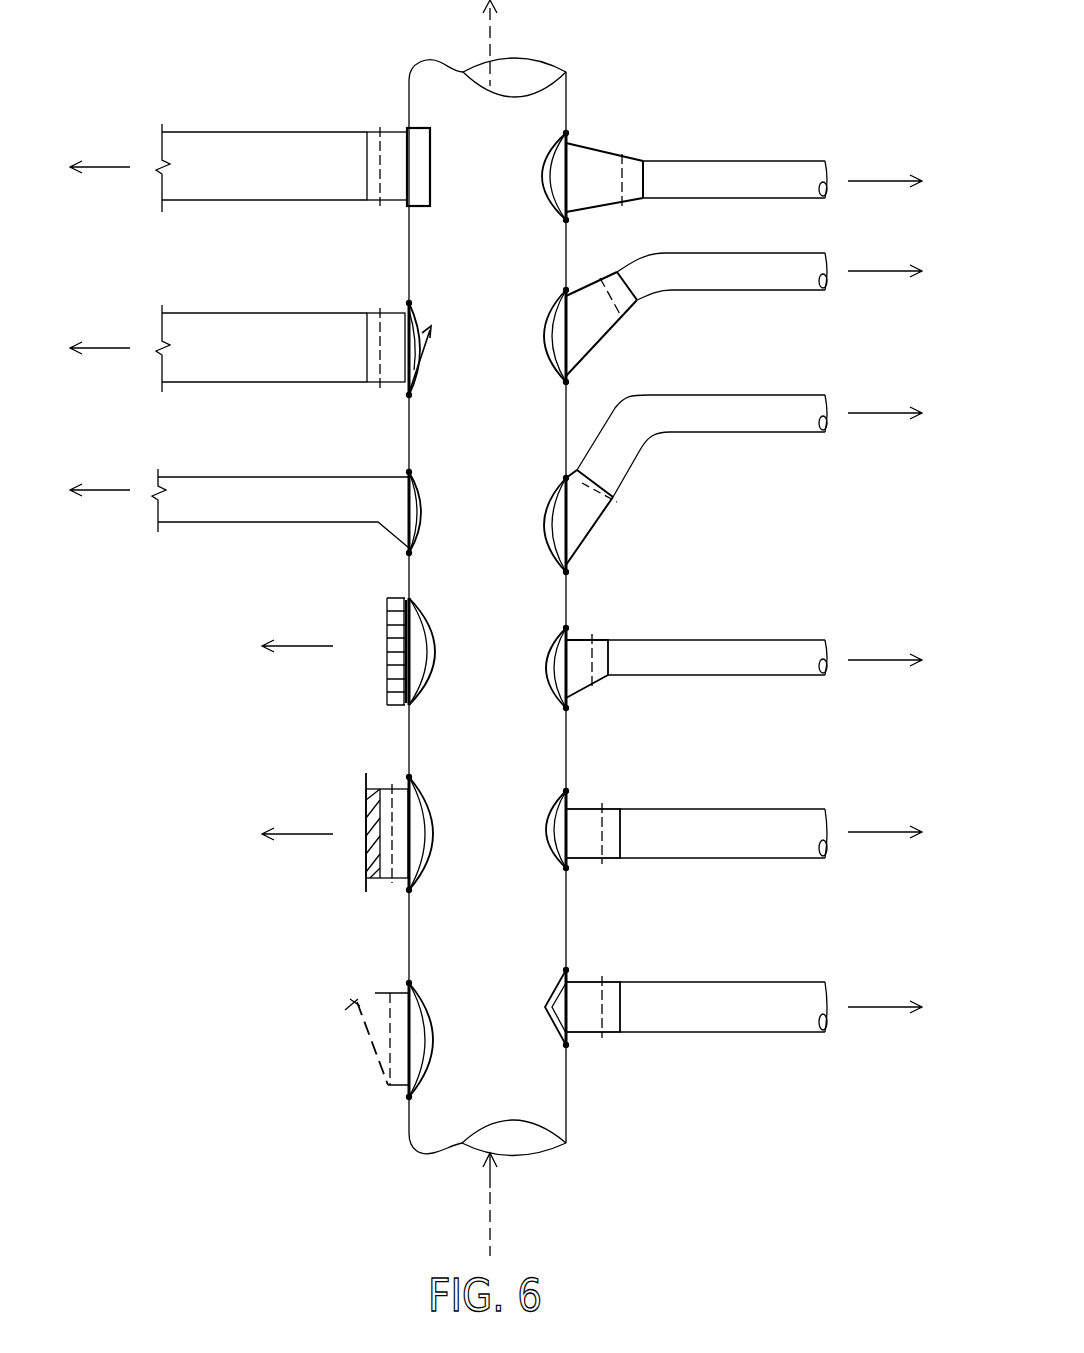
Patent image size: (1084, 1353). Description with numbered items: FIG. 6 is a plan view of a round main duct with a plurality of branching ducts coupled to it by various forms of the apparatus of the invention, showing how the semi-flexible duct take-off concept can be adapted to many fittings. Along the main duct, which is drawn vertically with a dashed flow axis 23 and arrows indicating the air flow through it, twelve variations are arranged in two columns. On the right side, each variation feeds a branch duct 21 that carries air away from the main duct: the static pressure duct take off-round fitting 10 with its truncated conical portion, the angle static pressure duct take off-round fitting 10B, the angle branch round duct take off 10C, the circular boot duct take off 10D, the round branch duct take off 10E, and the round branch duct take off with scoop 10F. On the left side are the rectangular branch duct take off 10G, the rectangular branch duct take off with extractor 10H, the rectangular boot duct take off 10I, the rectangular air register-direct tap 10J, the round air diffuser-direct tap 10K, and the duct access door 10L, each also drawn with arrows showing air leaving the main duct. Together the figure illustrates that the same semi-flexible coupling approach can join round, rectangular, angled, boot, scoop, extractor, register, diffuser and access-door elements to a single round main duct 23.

The static pressure duct take off-round fitting 10 is at (640, 134).
The angle static pressure duct take off-round fitting 10B is at (627, 247).
The angle branch round duct take off 10C is at (634, 516).
The circular boot duct take off 10D is at (627, 609).
The round branch duct take off 10E is at (634, 774).
The round branch duct take off with scoop 10F is at (632, 945).
The rectangular branch duct take off 10G is at (389, 109).
The rectangular branch duct take off with extractor 10H is at (389, 289).
The rectangular boot duct take off 10I is at (386, 452).
The rectangular air register-direct tap 10J is at (388, 574).
The round air diffuser-direct tap 10K is at (388, 756).
The duct access door 10L is at (388, 959).
The supply pipe 21 is at (762, 161).
The main flow pipe axis 23 is at (492, 1203).